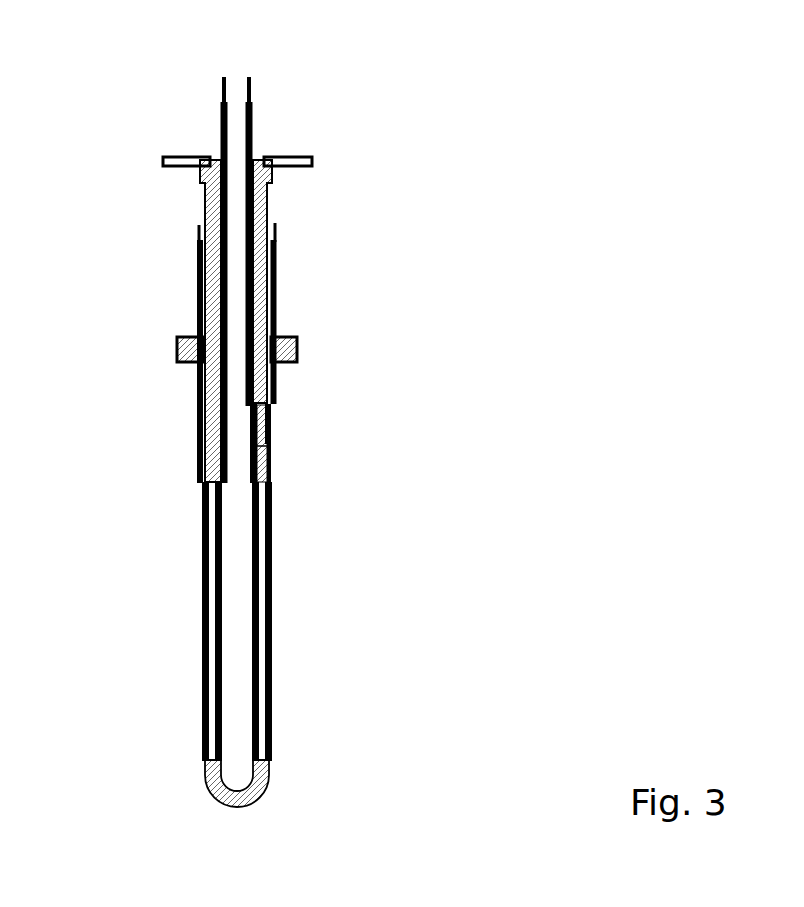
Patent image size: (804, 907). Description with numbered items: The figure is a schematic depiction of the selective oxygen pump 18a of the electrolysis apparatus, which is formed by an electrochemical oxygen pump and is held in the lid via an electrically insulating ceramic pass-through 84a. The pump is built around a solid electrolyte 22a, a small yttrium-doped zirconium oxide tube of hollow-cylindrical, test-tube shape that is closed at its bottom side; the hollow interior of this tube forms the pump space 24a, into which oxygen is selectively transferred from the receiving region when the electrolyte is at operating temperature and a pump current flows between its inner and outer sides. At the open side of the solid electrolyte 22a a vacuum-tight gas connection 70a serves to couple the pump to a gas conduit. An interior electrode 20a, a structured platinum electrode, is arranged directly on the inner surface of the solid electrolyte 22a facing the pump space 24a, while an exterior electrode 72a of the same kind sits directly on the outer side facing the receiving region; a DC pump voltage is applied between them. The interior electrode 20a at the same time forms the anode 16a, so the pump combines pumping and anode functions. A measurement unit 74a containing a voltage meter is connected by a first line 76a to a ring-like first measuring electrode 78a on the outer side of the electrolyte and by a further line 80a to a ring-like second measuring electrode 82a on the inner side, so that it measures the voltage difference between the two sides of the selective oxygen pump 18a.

The selective oxygen pump 18a is at (429, 193).
The pump space 24a is at (236, 106).
The line 80a is at (253, 118).
The gas connection 70a is at (298, 163).
The first line 76a is at (278, 256).
The electrically insulating pass-through 84a is at (299, 352).
The measurement unit 74a is at (292, 393).
The first measuring electrode 78a is at (272, 432).
The second measuring electrode 82a is at (259, 447).
The anode 16a is at (276, 644).
The interior electrode 20a is at (257, 650).
The exterior electrode 72a is at (203, 627).
The solid electrolyte 22a is at (213, 802).